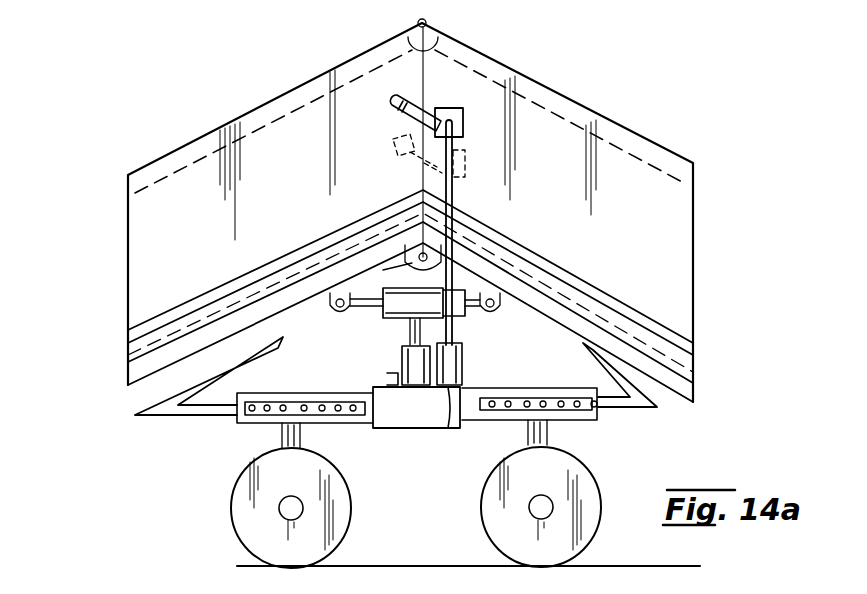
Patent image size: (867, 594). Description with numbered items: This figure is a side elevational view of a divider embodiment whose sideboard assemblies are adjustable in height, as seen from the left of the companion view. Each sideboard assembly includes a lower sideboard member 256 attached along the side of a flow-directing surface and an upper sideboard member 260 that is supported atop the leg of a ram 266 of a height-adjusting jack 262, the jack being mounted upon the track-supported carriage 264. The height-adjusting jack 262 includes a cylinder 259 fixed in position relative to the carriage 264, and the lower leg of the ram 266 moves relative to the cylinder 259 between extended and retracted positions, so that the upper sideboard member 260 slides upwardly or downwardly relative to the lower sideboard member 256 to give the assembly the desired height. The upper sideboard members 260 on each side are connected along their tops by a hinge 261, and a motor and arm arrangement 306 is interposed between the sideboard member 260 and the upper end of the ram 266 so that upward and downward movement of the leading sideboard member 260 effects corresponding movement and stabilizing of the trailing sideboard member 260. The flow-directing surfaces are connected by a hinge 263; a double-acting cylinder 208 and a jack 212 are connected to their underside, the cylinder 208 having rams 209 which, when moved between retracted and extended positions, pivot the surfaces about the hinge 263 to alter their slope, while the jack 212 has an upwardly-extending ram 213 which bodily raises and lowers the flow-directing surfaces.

The lower sideboard member 256 is at (127, 290).
The upper sideboard member 260 is at (215, 152).
The hinge 261 is at (427, 23).
The motor and arm arrangement 306 is at (446, 107).
The ram 266 is at (453, 180).
The hinge 263 is at (405, 263).
The rams 209 is at (345, 309).
The double-acting cylinder 208 is at (395, 320).
The ram 213 is at (422, 327).
The jack 212 is at (400, 371).
The cylinder 259 is at (463, 353).
The height-adjusting jack 262 is at (449, 424).
The carriage 264 is at (397, 430).